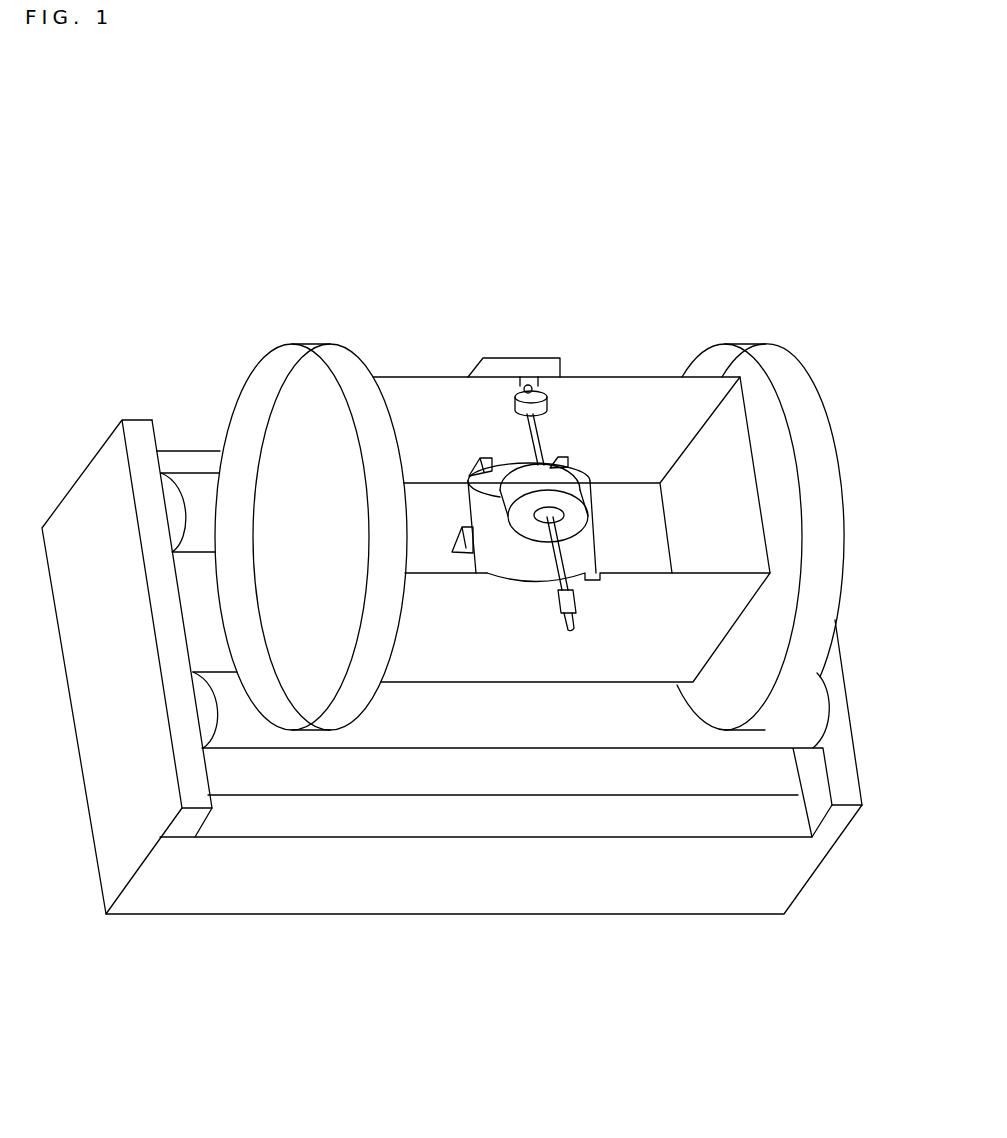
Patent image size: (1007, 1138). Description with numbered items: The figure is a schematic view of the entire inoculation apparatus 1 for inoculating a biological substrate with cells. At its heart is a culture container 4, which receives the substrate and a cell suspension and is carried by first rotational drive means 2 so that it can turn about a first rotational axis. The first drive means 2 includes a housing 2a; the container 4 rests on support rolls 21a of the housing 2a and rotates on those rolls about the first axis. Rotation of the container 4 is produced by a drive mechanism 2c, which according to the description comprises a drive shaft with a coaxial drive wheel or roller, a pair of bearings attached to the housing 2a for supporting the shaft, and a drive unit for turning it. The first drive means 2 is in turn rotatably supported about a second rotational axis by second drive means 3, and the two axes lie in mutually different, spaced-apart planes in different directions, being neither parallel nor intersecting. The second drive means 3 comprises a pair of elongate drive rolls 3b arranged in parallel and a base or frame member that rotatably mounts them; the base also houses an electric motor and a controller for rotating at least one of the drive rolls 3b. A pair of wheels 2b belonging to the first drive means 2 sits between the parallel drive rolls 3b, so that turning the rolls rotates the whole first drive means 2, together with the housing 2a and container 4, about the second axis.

The inoculation apparatus 1 is at (329, 252).
The first rotational drive means 2 is at (522, 337).
The housing 2a is at (508, 637).
The wheels 2b is at (265, 355).
The drive mechanism 2c is at (568, 413).
The support rolls 21a is at (470, 458).
The second drive means 3 is at (510, 928).
The drive rolls 3b is at (375, 751).
The culture container 4 is at (596, 525).